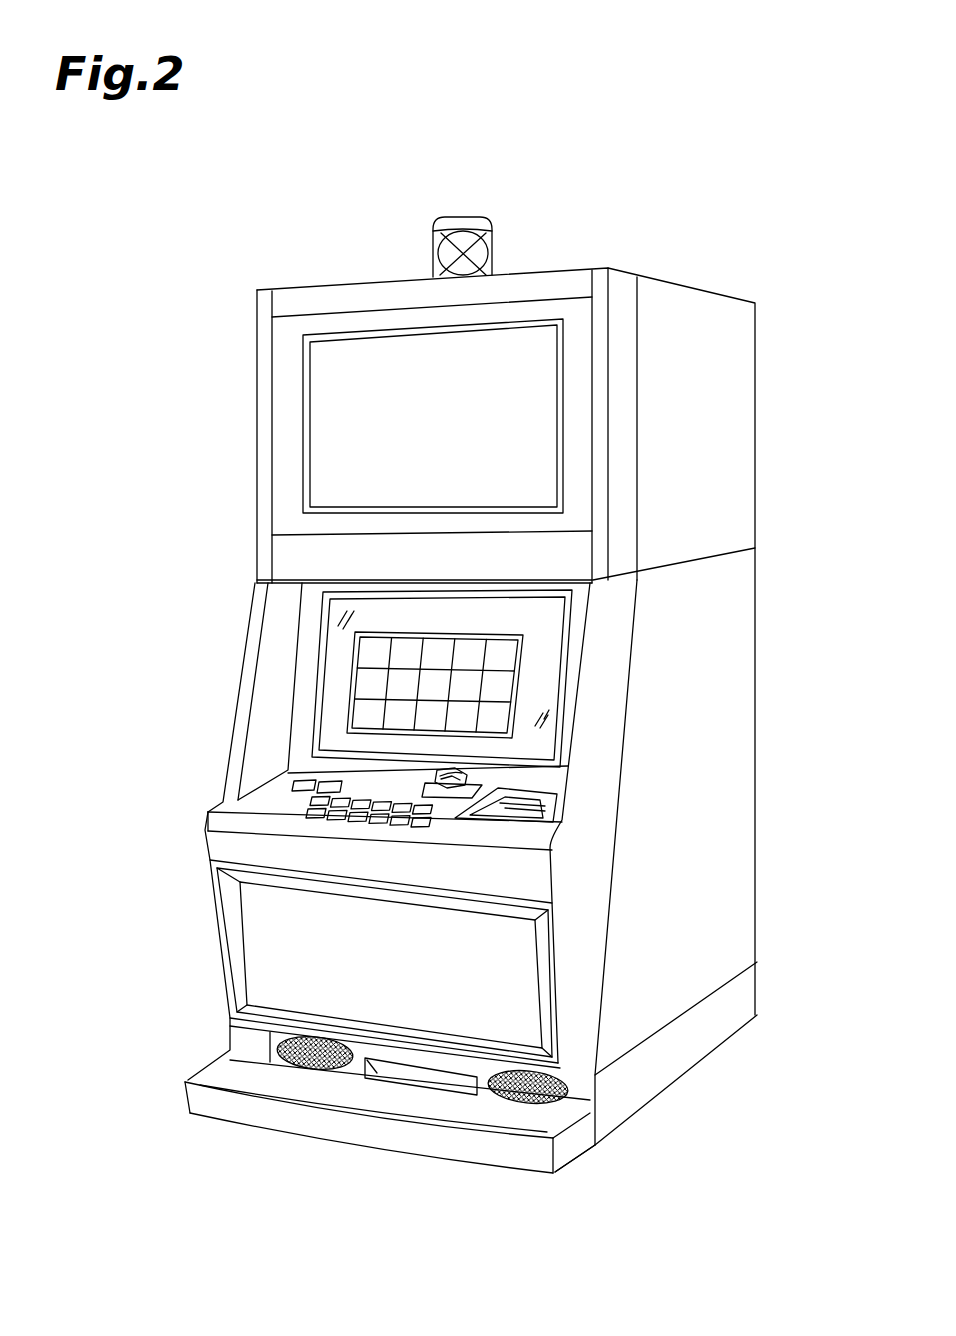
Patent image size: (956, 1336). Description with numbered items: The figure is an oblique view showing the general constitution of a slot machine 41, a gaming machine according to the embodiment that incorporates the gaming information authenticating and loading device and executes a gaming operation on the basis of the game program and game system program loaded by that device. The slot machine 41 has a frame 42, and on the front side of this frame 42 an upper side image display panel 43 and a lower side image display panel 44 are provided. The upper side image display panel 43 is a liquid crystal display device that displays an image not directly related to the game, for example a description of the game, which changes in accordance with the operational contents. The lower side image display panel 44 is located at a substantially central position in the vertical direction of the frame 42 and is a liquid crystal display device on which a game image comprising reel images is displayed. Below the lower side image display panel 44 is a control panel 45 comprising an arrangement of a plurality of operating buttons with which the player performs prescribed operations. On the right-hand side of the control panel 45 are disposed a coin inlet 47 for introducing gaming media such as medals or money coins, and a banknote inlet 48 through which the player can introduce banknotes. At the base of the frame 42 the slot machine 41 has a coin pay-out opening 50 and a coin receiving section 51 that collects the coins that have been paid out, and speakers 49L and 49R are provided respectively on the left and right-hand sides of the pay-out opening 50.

The slot machine 41 is at (708, 208).
The frame 42 is at (685, 668).
The upper side image display panel 43 is at (302, 375).
The lower side image display panel 44 is at (366, 616).
The control panel 45 is at (263, 807).
The coin inlet 47 is at (477, 781).
The banknote inlet 48 is at (530, 817).
The speaker 49L is at (278, 1093).
The speaker 49R is at (531, 1102).
The coin pay-out opening 50 is at (428, 1077).
The coin receiving section 51 is at (352, 1100).